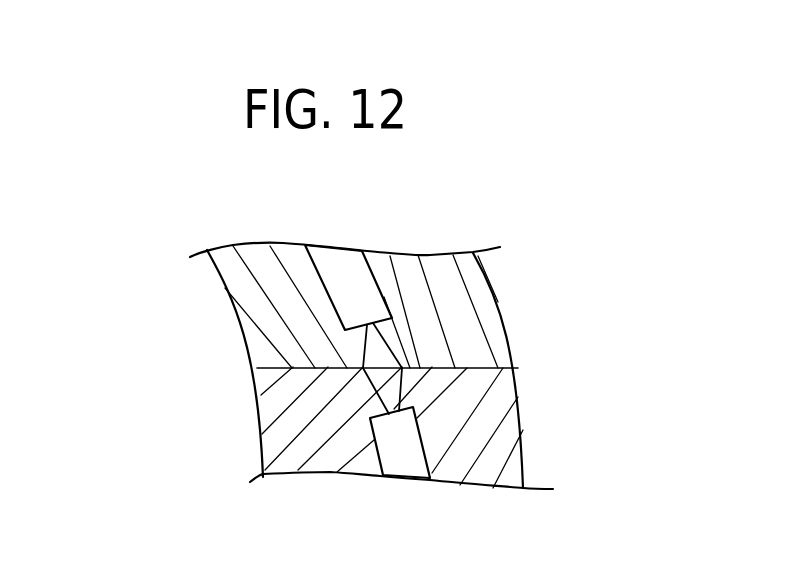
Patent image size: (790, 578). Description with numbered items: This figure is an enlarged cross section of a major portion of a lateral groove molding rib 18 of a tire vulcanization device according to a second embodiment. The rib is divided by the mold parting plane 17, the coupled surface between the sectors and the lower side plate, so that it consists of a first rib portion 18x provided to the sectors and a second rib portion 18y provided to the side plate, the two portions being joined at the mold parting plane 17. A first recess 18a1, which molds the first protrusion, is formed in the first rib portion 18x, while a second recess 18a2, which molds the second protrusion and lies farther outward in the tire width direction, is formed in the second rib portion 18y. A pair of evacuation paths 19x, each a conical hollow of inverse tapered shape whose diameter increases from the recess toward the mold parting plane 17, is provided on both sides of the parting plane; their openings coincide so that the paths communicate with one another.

The mold parting plane 17 is at (290, 368).
The lateral groove molding rib 18 is at (362, 200).
The first recess 18a1 is at (343, 275).
The second recess 18a2 is at (397, 450).
The first rib portion 18x is at (476, 274).
The second rib portion 18y is at (523, 460).
The evacuation path 19x is at (385, 353).